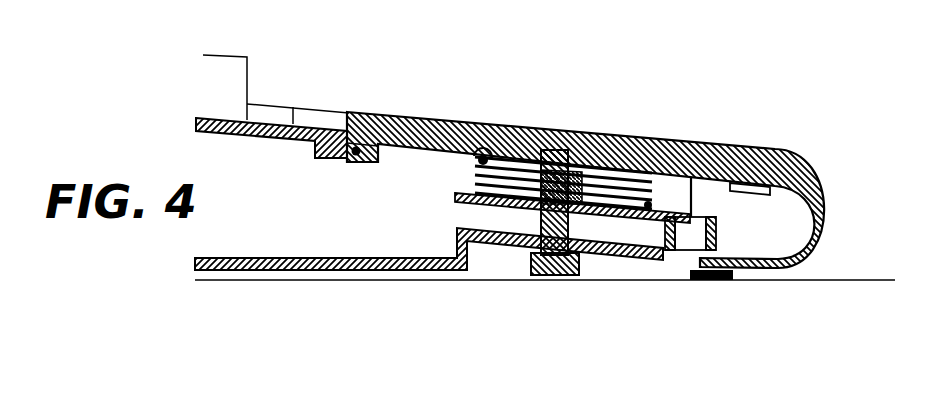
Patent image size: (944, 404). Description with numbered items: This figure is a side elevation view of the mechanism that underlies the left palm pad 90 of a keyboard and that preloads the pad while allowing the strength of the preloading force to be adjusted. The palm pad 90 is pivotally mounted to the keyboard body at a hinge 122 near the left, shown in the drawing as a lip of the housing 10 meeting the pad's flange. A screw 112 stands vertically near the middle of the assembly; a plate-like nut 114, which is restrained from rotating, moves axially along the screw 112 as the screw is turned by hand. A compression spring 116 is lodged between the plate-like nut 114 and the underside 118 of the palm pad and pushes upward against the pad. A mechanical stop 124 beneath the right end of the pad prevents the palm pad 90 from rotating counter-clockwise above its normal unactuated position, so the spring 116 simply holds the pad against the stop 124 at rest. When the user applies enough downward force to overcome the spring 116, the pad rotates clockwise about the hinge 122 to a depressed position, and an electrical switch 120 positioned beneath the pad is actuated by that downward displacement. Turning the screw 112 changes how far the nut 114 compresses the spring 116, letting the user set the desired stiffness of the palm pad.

The housing / top plate 10 is at (268, 122).
The left palm pad 90 is at (420, 113).
The screw 112 is at (537, 276).
The plate-like nut 114 is at (455, 200).
The compression spring 116 is at (481, 163).
The underside of the palm pad 118 is at (353, 161).
The electrical switch 120 is at (704, 214).
The hinge 122 is at (351, 163).
The mechanical stop 124 is at (733, 195).